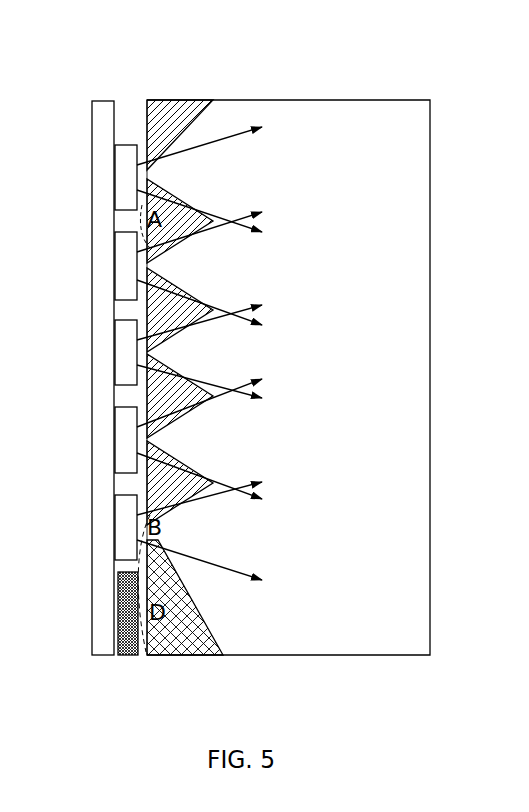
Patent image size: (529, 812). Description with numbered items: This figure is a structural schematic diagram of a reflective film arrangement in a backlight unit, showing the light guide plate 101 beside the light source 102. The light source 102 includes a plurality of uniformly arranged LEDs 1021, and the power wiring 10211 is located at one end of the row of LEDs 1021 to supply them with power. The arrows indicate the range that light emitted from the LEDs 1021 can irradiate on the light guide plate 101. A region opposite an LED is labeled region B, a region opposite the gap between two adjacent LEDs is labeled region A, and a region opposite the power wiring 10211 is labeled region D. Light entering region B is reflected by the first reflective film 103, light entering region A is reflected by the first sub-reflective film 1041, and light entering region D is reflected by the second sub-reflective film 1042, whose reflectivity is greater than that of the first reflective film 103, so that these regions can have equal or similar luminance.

The light guide plate 101 is at (355, 100).
The light source 102 is at (92, 101).
The LEDs 1021 is at (131, 145).
The power wiring 10211 is at (140, 657).
The first reflective film 103 is at (278, 122).
The first sub-reflective film 1041 is at (172, 247).
The second sub-reflective film 1042 is at (196, 641).